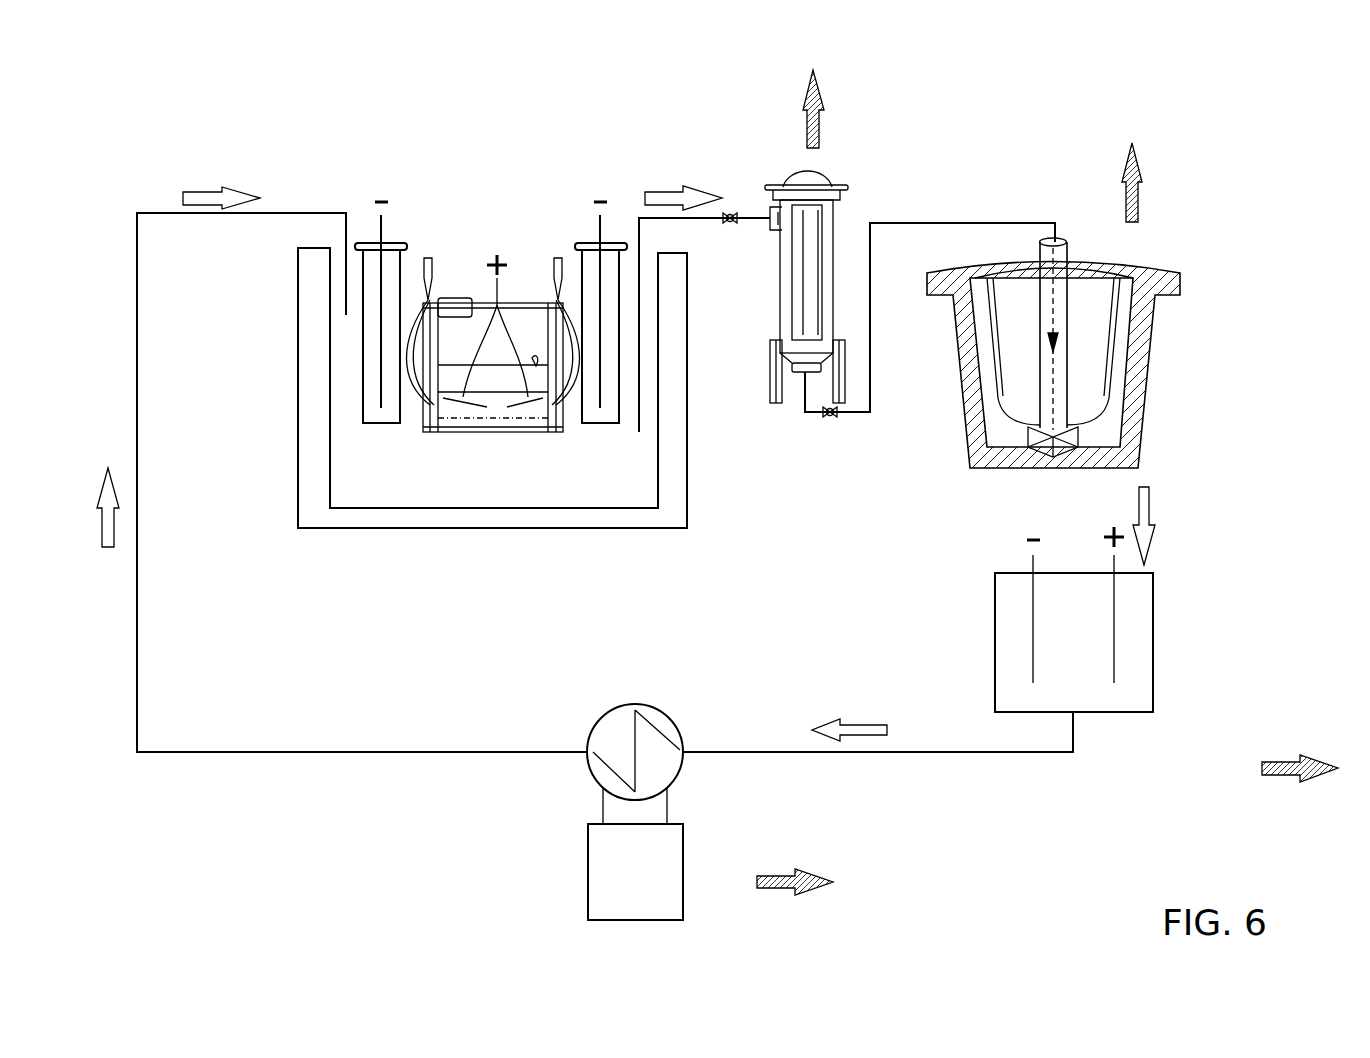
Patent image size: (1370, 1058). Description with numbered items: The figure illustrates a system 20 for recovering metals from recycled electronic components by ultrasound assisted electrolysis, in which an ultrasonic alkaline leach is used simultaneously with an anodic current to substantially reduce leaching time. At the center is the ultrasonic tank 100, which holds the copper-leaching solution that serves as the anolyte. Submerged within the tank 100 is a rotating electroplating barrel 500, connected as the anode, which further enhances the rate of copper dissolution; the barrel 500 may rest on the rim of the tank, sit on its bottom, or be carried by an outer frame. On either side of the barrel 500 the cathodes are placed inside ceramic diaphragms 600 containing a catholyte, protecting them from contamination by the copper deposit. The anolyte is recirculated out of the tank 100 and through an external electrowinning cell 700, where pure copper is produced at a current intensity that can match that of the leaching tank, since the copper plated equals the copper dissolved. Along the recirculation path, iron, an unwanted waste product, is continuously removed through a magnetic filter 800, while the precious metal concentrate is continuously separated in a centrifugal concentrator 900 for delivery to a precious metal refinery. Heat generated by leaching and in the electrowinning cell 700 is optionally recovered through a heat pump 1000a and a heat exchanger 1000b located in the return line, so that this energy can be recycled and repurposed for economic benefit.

The system 20 is at (533, 58).
The ultrasonic tank 100 is at (310, 383).
The rotating electroplating barrel 500 is at (493, 405).
The ceramic diaphragm 600 is at (382, 423).
The external electrowinning cell 700 is at (1130, 614).
The magnetic filter 800 is at (797, 310).
The centrifugal concentrator 900 is at (1058, 402).
The heat pump 1000a is at (607, 874).
The heat exchanger 1000b is at (635, 690).